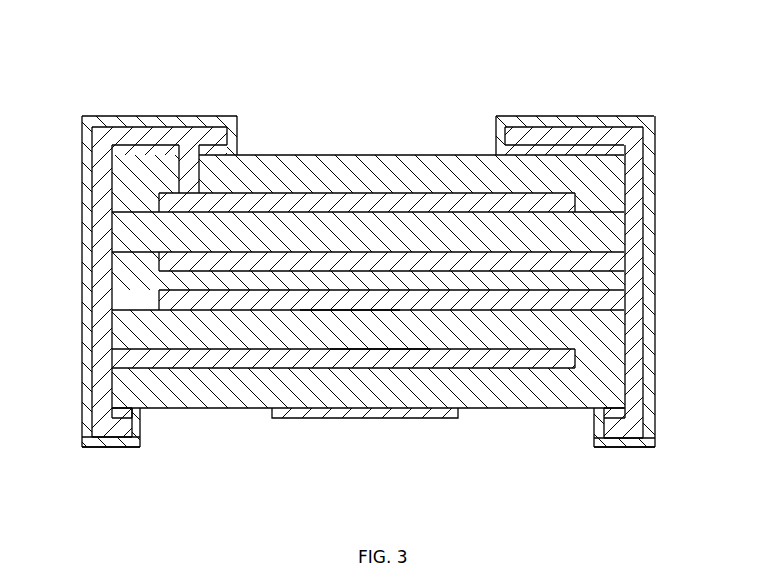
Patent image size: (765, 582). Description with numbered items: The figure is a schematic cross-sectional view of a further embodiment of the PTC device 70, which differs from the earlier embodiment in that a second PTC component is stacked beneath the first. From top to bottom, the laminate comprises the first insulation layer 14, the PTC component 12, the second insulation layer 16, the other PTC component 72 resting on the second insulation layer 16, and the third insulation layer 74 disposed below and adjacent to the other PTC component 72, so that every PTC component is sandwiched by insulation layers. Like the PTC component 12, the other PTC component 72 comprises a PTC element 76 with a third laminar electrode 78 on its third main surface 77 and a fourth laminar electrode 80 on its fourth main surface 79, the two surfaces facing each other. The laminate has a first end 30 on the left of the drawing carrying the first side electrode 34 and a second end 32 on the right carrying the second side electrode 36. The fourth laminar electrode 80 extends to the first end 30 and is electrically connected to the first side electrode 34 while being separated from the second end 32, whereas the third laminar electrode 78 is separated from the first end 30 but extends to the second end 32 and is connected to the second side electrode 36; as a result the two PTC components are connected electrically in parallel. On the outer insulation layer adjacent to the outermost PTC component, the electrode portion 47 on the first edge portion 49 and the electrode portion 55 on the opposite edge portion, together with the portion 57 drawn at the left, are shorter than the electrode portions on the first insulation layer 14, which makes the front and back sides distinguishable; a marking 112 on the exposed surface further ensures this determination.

The PTC device 70 is at (391, 254).
The first insulation layer 14 is at (610, 193).
The PTC component 12 is at (612, 226).
The second end 32 is at (612, 245).
The second insulation layer 16 is at (612, 264).
The other PTC component 72 is at (432, 307).
The third laminar electrode 78 is at (610, 281).
The PTC element 76 is at (610, 300).
The fourth laminar electrode 80 is at (612, 335).
The third insulation layer 74 is at (605, 352).
The third main surface 77 is at (348, 313).
The fourth main surface 79 is at (375, 350).
The first side electrode 34 is at (102, 212).
The first end 30 is at (110, 278).
The second side electrode 36 is at (640, 380).
The left bottom contact pad 57 is at (140, 403).
The first edge portion 49 is at (625, 403).
The marking 112 is at (362, 417).
The electrode portion 55 is at (141, 455).
The electrode portion 47 is at (655, 455).